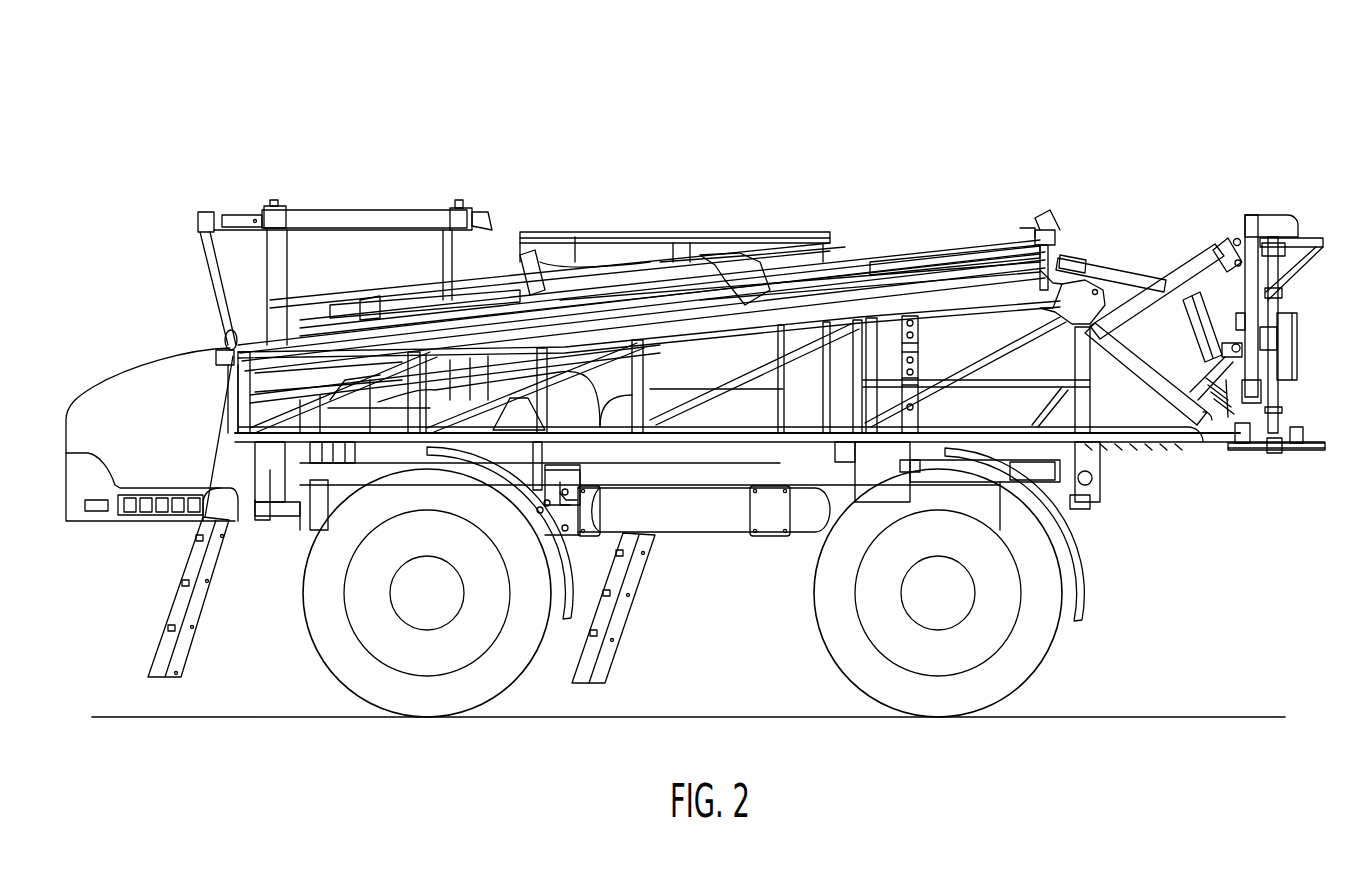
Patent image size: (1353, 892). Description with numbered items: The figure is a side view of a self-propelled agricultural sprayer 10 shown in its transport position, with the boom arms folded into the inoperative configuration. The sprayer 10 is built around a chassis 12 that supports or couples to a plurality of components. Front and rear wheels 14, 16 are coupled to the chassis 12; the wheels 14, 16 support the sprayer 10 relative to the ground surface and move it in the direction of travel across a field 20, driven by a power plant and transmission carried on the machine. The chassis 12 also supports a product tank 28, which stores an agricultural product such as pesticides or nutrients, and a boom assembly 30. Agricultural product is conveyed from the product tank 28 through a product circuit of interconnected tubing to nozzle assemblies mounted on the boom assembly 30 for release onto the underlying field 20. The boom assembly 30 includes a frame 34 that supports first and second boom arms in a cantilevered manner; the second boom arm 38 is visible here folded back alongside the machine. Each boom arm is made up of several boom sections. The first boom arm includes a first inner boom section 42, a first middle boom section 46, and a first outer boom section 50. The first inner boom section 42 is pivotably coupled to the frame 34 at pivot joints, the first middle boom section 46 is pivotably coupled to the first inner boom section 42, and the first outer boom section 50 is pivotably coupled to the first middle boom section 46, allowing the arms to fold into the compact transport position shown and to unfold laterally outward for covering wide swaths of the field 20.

The self-propelled agricultural sprayer 10 is at (702, 383).
The chassis 12 is at (695, 515).
The front wheel 14 is at (508, 660).
The rear wheel 16 is at (1015, 665).
The field 20 is at (350, 210).
The product tank 28 is at (576, 262).
The boom assembly 30 is at (702, 283).
The frame 34 is at (1288, 216).
The second boom arm 38 is at (1052, 215).
The first inner boom section 42 is at (873, 242).
The first middle boom section 46 is at (677, 341).
The first outer boom section 50 is at (811, 281).